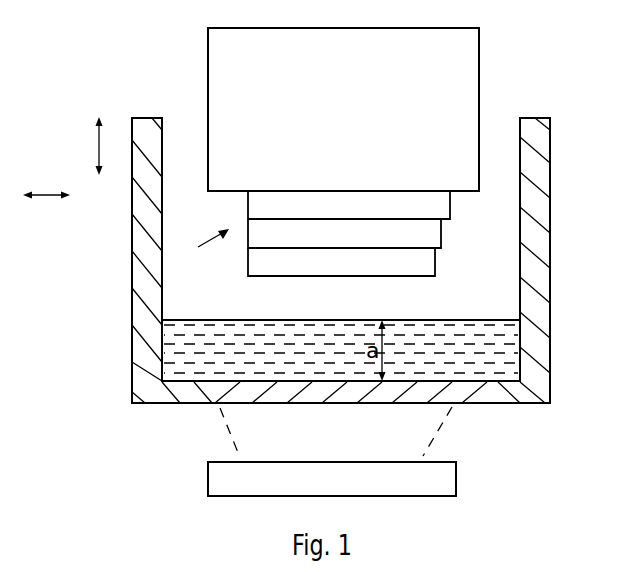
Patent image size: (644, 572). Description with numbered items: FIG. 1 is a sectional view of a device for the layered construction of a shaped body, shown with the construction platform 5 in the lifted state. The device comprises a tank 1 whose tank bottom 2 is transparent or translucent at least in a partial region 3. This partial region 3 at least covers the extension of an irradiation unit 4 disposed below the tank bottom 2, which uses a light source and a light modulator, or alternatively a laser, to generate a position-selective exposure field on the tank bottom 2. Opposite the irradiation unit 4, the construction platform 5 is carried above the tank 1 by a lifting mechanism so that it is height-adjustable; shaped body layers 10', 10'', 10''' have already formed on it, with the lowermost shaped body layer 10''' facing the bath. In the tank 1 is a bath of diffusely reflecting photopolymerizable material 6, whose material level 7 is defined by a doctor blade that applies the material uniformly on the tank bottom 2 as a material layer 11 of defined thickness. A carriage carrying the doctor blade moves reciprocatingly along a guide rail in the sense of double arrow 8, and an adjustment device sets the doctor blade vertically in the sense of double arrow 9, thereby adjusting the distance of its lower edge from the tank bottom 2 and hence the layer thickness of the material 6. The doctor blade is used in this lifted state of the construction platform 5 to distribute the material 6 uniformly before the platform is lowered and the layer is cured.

The tank 1 is at (537, 240).
The tank bottom 2 is at (497, 378).
The partial region 3 is at (260, 392).
The irradiation unit 4 is at (458, 478).
The construction platform 5 is at (480, 56).
The photopolymerizable material 6 is at (187, 349).
The material level 7 is at (188, 320).
The double arrow 8 is at (46, 207).
The double arrow 9 is at (90, 146).
The shaped body layer 10' is at (376, 205).
The shaped body layer 10'' is at (379, 235).
The lowermost shaped body layer 10''' is at (382, 268).
The material layer 11 is at (201, 248).